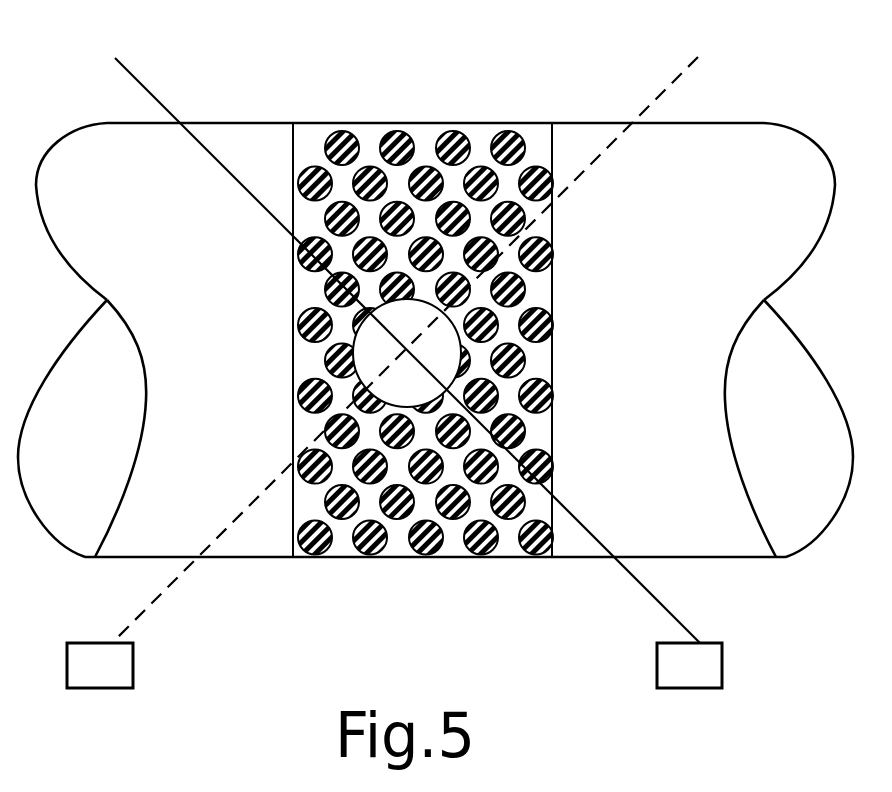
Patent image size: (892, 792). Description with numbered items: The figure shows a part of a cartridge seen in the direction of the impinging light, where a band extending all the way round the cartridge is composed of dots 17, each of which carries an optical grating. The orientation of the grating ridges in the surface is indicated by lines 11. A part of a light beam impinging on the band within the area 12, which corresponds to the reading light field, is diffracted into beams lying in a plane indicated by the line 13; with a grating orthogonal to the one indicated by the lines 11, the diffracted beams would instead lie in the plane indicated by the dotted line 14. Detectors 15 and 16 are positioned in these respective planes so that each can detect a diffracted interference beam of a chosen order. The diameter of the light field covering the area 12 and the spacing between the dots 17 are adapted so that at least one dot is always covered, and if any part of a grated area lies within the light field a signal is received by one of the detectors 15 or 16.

The lines indicating grating ridge orientation 11 is at (453, 148).
The area 12 is at (404, 380).
The line indicating diffraction plane 13 is at (142, 83).
The dotted line indicating orthogonal diffraction plane 14 is at (665, 92).
The detector 15 is at (667, 667).
The detector 16 is at (133, 667).
The dots 17 is at (381, 128).